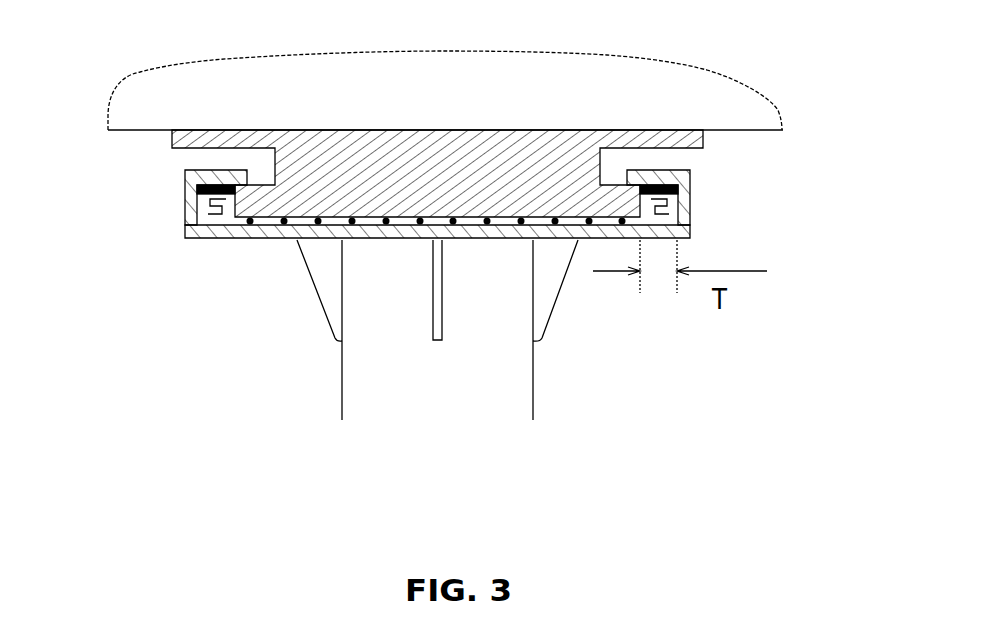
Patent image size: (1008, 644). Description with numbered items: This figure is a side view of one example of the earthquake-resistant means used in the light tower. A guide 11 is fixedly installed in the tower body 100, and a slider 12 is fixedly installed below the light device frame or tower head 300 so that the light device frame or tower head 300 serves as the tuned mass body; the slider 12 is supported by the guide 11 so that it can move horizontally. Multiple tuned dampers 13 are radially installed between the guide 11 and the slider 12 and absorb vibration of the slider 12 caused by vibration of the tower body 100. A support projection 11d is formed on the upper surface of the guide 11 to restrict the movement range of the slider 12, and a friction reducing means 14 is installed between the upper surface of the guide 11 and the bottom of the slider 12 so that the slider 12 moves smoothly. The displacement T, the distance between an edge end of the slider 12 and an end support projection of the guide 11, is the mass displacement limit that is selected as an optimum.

The light device frame or tower head 300 is at (748, 113).
The guide 11 is at (573, 280).
The support projection 11d is at (180, 204).
The tuned damper 13 is at (692, 197).
The friction reducing means 14 is at (485, 240).
The slider 12 is at (443, 340).
The tower body 100 is at (370, 368).